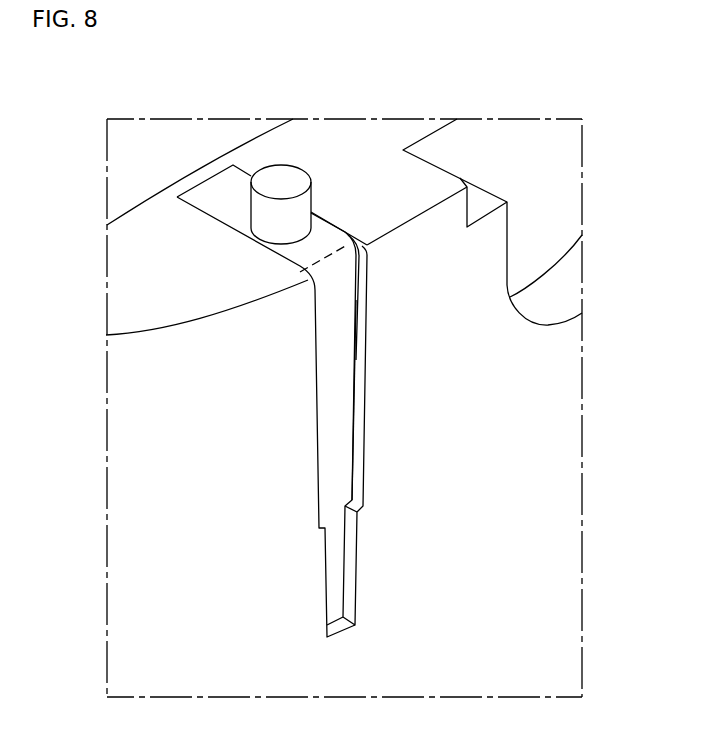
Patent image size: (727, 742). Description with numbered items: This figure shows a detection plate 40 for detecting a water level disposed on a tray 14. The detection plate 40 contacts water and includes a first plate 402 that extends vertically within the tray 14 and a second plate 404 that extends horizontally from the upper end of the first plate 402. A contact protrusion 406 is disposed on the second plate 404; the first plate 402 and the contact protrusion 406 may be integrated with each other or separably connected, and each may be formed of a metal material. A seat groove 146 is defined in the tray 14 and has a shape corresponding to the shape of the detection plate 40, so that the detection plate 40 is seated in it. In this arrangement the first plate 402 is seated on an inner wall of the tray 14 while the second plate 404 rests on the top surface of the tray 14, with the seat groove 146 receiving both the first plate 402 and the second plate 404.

The detection plate 40 is at (200, 158).
The first plate 402 is at (328, 347).
The second plate 404 is at (220, 208).
The contact protrusion 406 is at (281, 183).
The tray 14 is at (372, 150).
The seat groove 146 is at (362, 340).